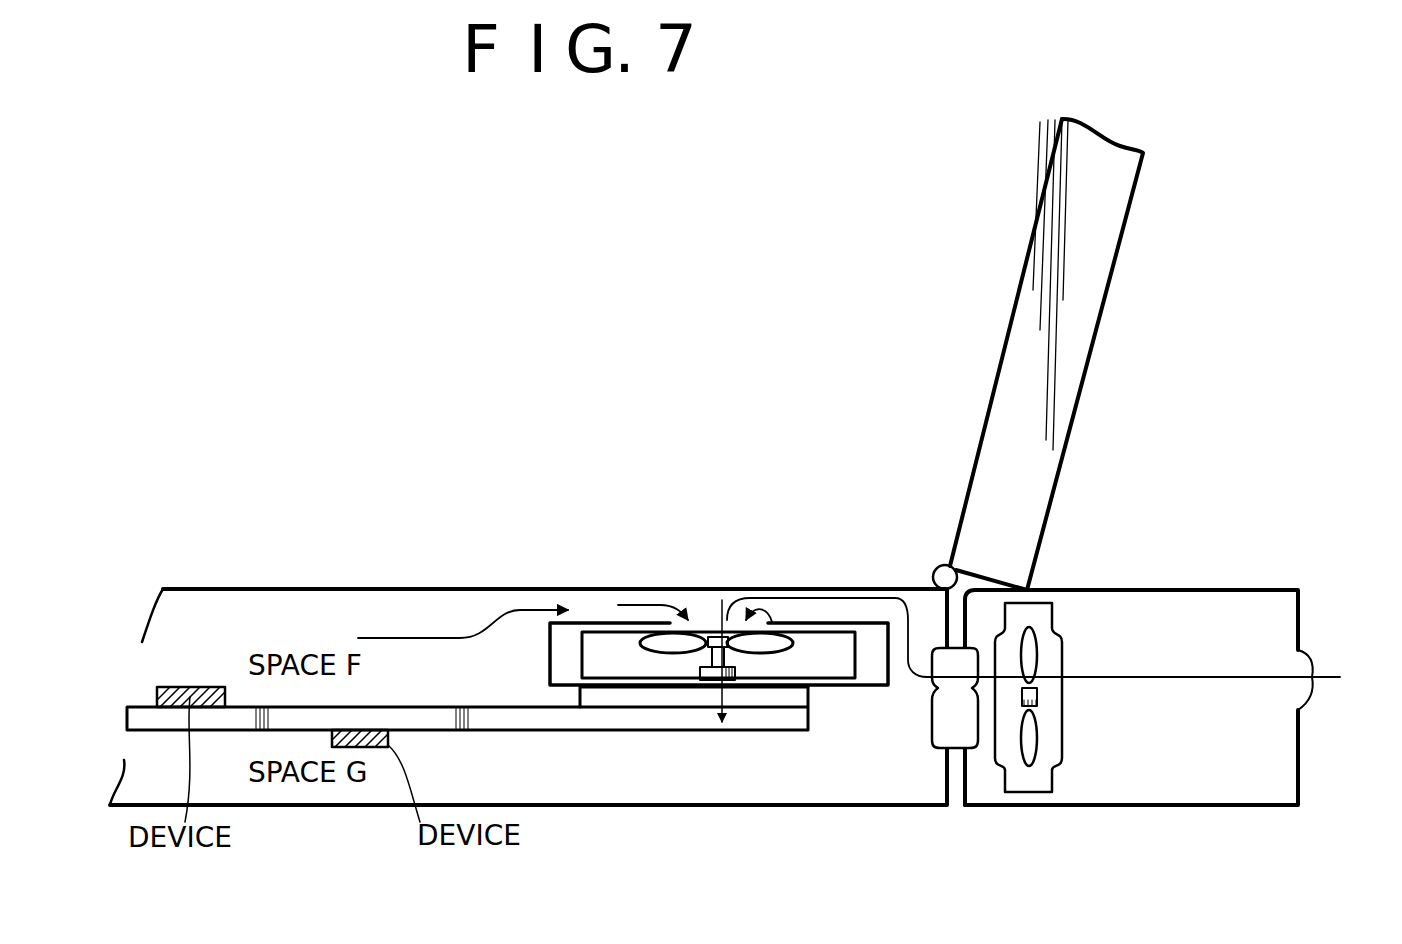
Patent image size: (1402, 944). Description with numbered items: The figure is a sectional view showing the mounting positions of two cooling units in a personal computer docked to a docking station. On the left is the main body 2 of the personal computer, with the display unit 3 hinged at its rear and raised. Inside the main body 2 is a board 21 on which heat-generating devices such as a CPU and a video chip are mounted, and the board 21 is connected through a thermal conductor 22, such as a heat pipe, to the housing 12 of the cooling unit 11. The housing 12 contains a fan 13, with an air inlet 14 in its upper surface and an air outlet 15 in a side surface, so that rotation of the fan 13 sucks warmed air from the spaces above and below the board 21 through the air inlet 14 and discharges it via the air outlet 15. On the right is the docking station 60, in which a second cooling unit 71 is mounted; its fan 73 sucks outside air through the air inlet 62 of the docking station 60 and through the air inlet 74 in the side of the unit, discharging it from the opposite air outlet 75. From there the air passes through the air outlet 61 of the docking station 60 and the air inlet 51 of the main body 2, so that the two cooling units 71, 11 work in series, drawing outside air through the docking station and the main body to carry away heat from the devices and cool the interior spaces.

The main body 2 is at (796, 807).
The display unit 3 is at (1014, 313).
The cooling unit 11 is at (590, 632).
The housing 12 is at (707, 597).
The fan 13 is at (778, 643).
The air inlet 14 is at (718, 600).
The air outlet 15 is at (678, 687).
The board 21 is at (515, 713).
The thermal conductor 22 is at (652, 697).
The air inlet 51 is at (928, 697).
The docking station 60 is at (1222, 592).
The air outlet 61 is at (990, 660).
The air inlet 62 is at (1318, 675).
The cooling unit 71 is at (1055, 778).
The fan 73 is at (1032, 656).
The air inlet 74 is at (1063, 695).
The air outlet 75 is at (990, 660).